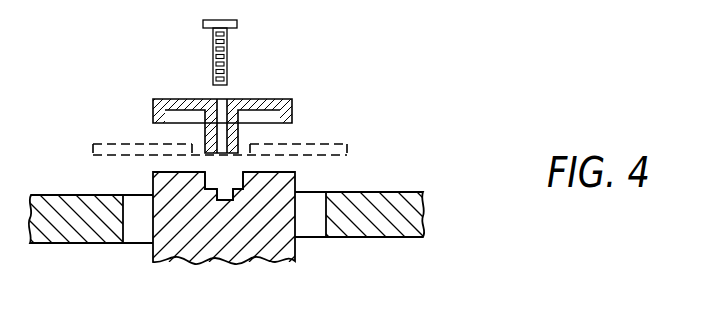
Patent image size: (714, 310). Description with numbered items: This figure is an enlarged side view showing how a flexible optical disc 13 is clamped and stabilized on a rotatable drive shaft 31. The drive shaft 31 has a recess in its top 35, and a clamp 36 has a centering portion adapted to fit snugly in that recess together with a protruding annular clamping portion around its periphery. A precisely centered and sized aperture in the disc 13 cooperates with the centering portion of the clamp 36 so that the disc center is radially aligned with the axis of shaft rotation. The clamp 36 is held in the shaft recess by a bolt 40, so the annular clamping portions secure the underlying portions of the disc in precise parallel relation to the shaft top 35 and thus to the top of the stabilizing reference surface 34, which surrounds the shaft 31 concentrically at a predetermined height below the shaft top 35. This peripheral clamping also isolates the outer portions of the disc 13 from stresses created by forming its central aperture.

The optical disc 13 is at (331, 142).
The drive shaft 31 is at (288, 254).
The stabilizing reference surface 34 is at (402, 191).
The top of the drive shaft 35 is at (280, 172).
The clamp 36 is at (268, 92).
The bolt 40 is at (237, 24).